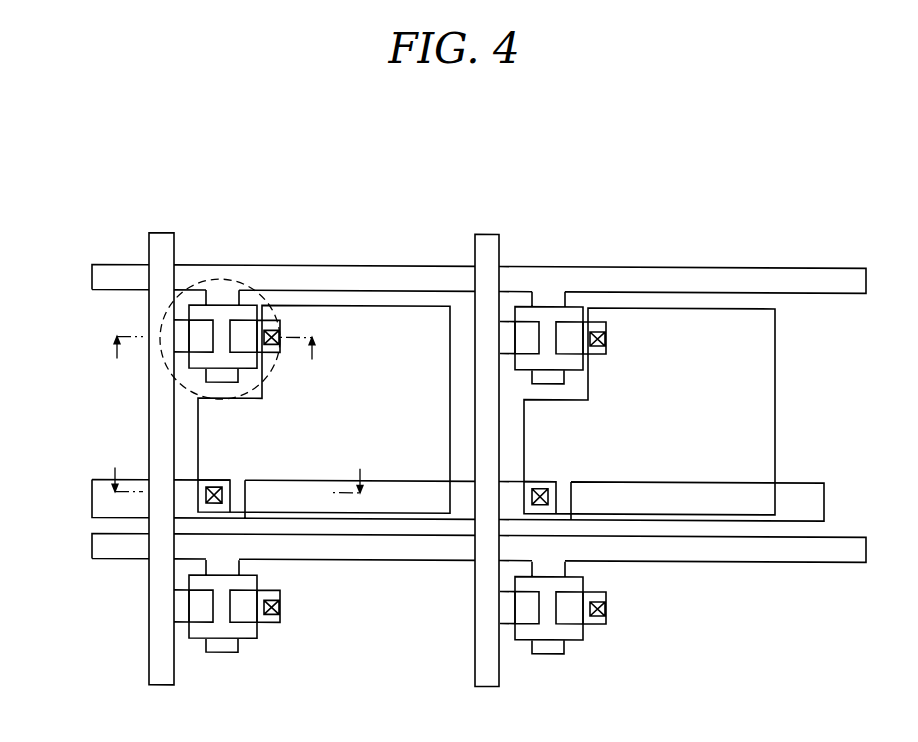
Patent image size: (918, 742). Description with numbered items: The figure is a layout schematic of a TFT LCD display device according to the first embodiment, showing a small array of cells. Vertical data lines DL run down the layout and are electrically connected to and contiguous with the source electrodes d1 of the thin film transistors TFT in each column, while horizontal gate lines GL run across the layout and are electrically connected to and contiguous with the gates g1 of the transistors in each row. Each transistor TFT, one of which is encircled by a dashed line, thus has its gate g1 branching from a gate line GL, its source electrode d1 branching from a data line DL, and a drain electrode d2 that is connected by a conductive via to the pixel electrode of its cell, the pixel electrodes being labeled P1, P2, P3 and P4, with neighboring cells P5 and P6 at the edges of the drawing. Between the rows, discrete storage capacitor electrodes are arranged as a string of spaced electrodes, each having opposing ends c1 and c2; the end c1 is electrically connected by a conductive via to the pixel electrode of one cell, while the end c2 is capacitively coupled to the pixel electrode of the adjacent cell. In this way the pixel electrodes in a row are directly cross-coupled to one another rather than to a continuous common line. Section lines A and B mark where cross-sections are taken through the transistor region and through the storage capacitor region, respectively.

The data line DL is at (163, 243).
The gate line GL is at (102, 277).
The gate g1 is at (223, 292).
The source electrode d1 is at (200, 335).
The drain electrode d2 is at (248, 333).
The end of storage capacitor electrode c1 is at (213, 483).
The end of storage capacitor electrode c2 is at (256, 486).
The pixel electrode P1 is at (331, 408).
The pixel electrode P2 is at (675, 411).
The pixel electrode P3 is at (310, 654).
The pixel electrode P4 is at (651, 656).
The pixel electrode P5 is at (58, 412).
The pixel electrode P6 is at (312, 242).
The thin film transistor TFT is at (268, 374).
The section line A-A' A is at (217, 361).
The section line B-B' B is at (241, 468).